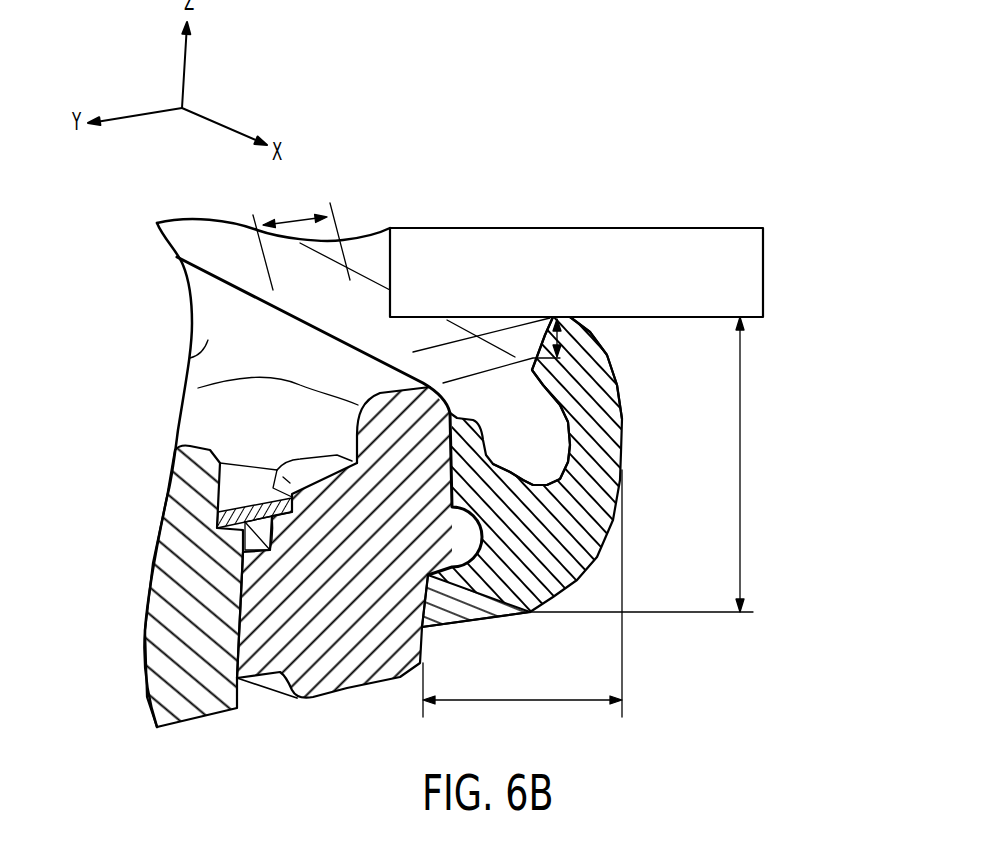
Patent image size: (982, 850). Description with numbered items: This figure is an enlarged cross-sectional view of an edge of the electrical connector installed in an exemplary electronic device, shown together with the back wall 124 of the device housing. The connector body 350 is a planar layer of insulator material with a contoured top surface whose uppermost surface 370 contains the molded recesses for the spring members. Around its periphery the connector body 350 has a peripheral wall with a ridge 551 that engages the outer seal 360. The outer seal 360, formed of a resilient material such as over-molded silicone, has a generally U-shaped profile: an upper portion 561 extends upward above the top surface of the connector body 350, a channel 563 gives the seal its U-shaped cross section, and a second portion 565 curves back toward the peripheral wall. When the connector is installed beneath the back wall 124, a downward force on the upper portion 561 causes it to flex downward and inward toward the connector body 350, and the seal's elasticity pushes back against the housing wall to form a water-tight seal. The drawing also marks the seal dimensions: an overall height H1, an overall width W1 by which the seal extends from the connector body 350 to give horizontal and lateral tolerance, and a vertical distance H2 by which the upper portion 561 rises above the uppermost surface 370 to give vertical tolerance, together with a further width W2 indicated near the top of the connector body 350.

The back wall 124 is at (780, 270).
The connector body 350 is at (152, 412).
The outer seal 360 is at (578, 548).
The uppermost surface 370 is at (263, 357).
The ridge 551 is at (445, 608).
The upper portion 561 is at (585, 360).
The channel 563 is at (549, 436).
The second portion 565 is at (497, 613).
The overall width W1 is at (522, 601).
The width dimension W2 is at (301, 238).
The overall height H1 is at (647, 464).
The vertical distance H2 is at (544, 338).